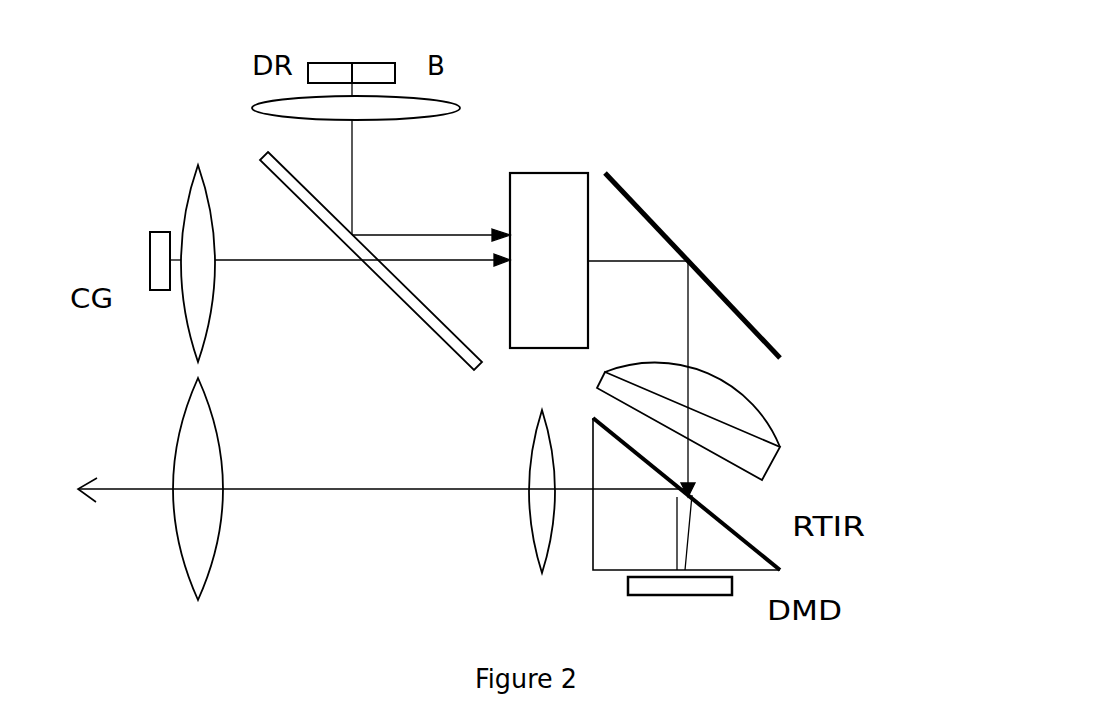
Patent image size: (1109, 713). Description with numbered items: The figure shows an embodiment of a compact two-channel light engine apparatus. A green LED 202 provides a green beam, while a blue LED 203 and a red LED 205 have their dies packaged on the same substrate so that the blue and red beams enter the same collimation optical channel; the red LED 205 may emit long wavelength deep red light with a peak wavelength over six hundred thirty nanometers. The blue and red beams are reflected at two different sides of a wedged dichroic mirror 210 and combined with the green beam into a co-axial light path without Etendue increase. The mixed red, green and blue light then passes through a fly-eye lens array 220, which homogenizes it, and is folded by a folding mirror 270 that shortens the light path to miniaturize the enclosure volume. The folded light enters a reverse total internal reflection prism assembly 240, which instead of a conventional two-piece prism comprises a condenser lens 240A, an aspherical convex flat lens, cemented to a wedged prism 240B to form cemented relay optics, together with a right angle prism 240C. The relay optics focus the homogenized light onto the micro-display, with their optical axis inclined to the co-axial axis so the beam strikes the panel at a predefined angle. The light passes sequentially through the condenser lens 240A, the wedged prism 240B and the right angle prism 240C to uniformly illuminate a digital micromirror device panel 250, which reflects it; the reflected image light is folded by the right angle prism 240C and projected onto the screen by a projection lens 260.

The green LED 202 is at (148, 238).
The blue LED 203 is at (377, 62).
The red LED 205 is at (332, 62).
The wedged dichroic mirror 210 is at (393, 302).
The fly-eye lens array 220 is at (547, 170).
The RTIR prism assembly 240 is at (776, 430).
The condenser lens 240A is at (767, 408).
The wedged prism 240B is at (778, 463).
The right angle prism 240C is at (733, 575).
The DMD panel 250 is at (672, 597).
The projection lens 260 is at (537, 568).
The folding mirror 270 is at (682, 243).